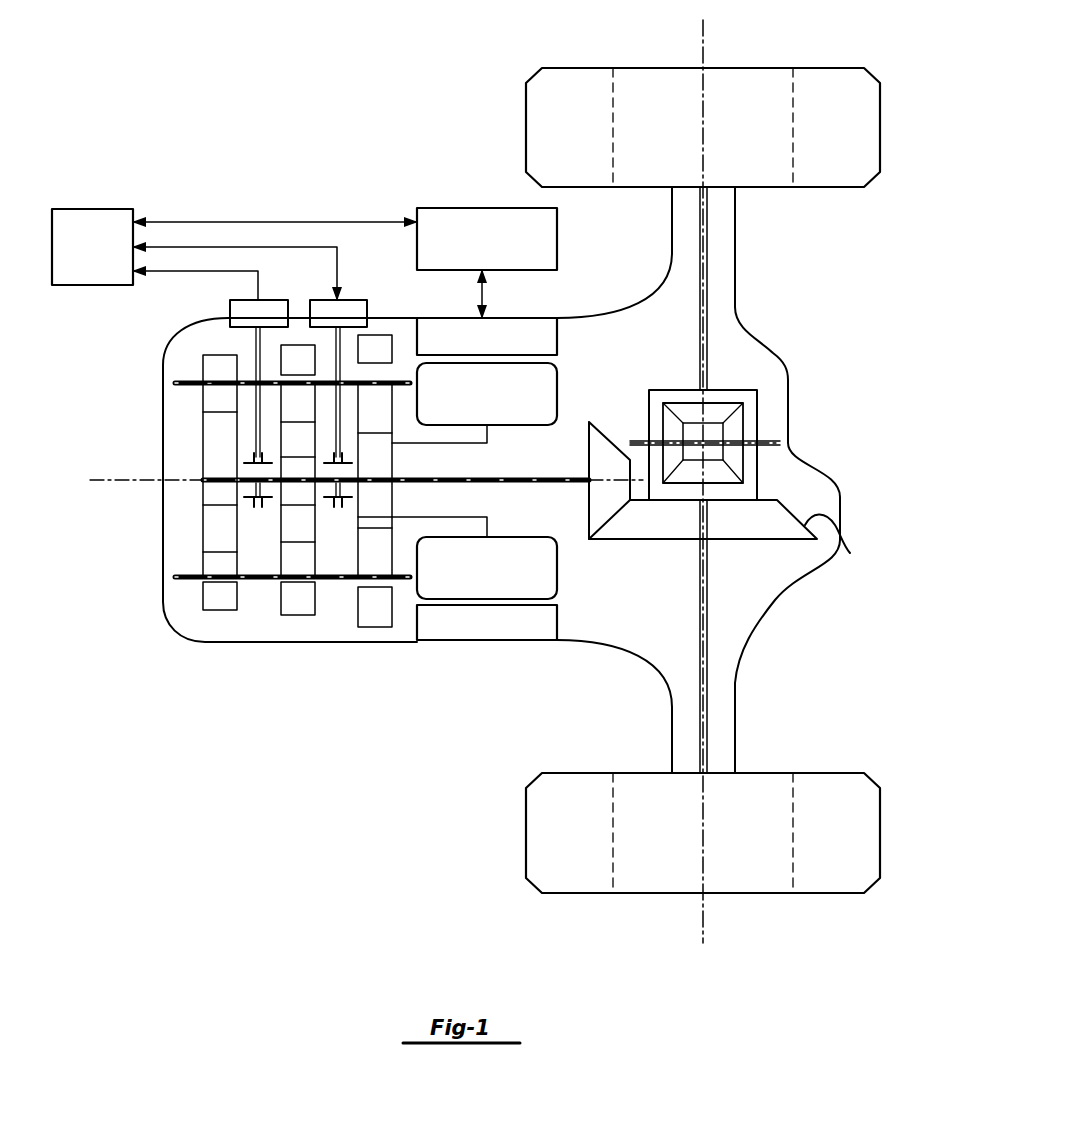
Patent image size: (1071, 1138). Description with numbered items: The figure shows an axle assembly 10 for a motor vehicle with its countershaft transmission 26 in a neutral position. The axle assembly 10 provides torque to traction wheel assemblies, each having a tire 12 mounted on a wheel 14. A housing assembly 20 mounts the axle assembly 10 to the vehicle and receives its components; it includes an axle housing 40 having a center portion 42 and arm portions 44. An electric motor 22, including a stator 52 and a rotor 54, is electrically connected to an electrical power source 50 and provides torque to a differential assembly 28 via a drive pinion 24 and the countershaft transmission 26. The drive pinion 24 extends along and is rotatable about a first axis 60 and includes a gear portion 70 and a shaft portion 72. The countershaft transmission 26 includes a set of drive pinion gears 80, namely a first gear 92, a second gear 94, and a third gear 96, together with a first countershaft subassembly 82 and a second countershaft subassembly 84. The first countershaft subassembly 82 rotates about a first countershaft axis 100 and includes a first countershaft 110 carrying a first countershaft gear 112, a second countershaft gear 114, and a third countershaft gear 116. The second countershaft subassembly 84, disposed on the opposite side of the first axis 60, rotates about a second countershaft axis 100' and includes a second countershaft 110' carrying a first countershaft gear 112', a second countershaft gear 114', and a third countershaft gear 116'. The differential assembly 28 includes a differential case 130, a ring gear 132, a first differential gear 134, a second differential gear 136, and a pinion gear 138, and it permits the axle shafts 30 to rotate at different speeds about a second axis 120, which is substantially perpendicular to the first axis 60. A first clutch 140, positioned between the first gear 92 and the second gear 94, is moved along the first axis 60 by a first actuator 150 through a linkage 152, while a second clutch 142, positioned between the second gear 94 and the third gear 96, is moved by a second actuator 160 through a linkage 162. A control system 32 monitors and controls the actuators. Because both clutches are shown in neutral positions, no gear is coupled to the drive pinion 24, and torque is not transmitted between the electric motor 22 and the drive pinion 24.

The axle assembly 10 is at (828, 422).
The tire 12 is at (880, 128).
The wheel 14 is at (760, 68).
The housing assembly 20 is at (163, 490).
The electric motor 22 is at (483, 647).
The drive pinion 24 is at (603, 430).
The countershaft transmission 26 is at (290, 620).
The differential assembly 28 is at (760, 410).
The axle shaft 30 is at (707, 240).
The control system 32 is at (82, 258).
The axle housing 40 is at (773, 353).
The center portion 42 is at (845, 507).
The arm portion 44 is at (672, 240).
The electrical power source 50 is at (477, 250).
The stator 52 is at (477, 348).
The rotor 54 is at (477, 405).
The first axis 60 is at (100, 480).
The gear portion 70 is at (589, 465).
The shaft portion 72 is at (503, 483).
The set of drive pinion gears 80 is at (195, 433).
The first countershaft subassembly 82 is at (203, 362).
The second countershaft subassembly 84 is at (203, 592).
The first gear 92 is at (358, 520).
The second gear 94 is at (280, 520).
The third gear 96 is at (203, 537).
The first countershaft axis 100 is at (253, 375).
The second countershaft axis 100' is at (252, 570).
The first countershaft 110 is at (178, 392).
The second countershaft 110' is at (245, 580).
The first countershaft gear 112 is at (375, 384).
The first countershaft gear 112' is at (375, 577).
The second countershaft gear 114 is at (298, 401).
The second countershaft gear 114' is at (298, 578).
The third countershaft gear 116 is at (220, 383).
The third countershaft gear 116' is at (220, 581).
The second axis 120 is at (700, 908).
The differential case 130 is at (680, 390).
The ring gear 132 is at (850, 553).
The first differential gear 134 is at (717, 403).
The second differential gear 136 is at (717, 485).
The pinion gear 138 is at (697, 447).
The first clutch 140 is at (352, 463).
The second clutch 142 is at (244, 463).
The first actuator 150 is at (338, 313).
The linkage 152 is at (336, 345).
The second actuator 160 is at (259, 313).
The linkage 162 is at (255, 352).